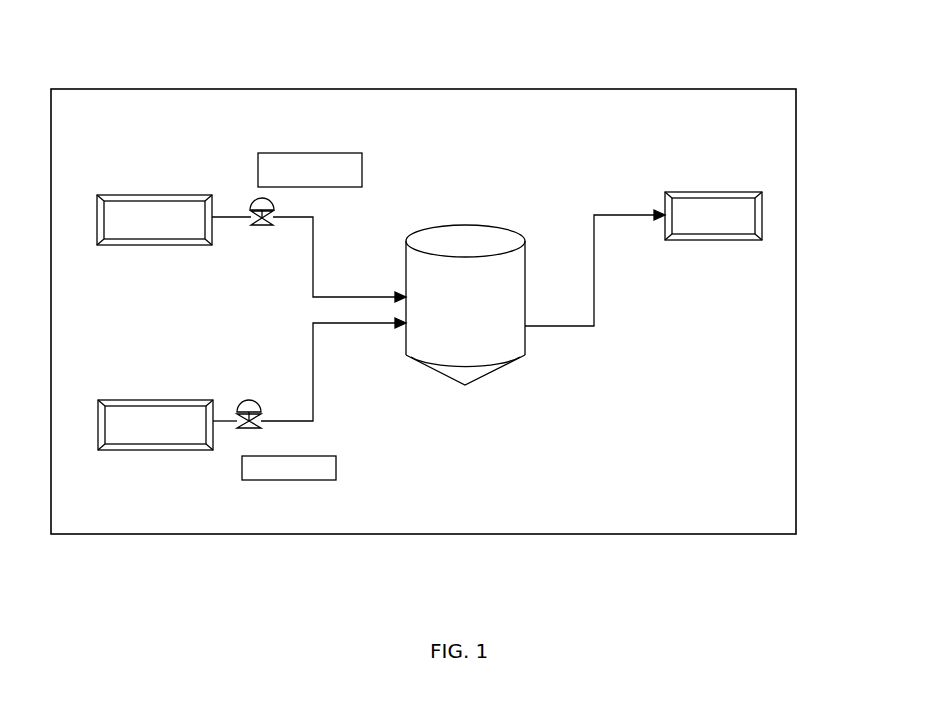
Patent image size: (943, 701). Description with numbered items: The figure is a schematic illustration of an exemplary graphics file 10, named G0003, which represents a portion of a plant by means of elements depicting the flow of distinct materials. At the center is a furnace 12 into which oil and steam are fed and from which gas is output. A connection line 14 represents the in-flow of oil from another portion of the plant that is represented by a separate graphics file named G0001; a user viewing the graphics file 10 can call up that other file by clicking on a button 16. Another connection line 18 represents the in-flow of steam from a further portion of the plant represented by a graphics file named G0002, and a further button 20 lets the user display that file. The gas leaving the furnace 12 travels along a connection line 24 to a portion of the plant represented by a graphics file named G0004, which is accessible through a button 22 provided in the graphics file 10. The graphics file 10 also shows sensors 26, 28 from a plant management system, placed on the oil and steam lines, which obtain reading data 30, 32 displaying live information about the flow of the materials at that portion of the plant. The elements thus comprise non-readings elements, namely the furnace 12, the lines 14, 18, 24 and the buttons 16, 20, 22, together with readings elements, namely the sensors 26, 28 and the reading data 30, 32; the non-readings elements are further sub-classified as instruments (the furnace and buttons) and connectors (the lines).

The graphics file 10 is at (632, 87).
The furnace 12 is at (455, 222).
The connection line 14 is at (327, 292).
The button 16 is at (113, 194).
The connection line 18 is at (330, 325).
The button 20 is at (140, 398).
The button 22 is at (692, 190).
The connection line 24 is at (596, 290).
The sensor 26 is at (250, 206).
The sensor 28 is at (240, 402).
The reading data 30 is at (297, 152).
The reading data 32 is at (337, 468).